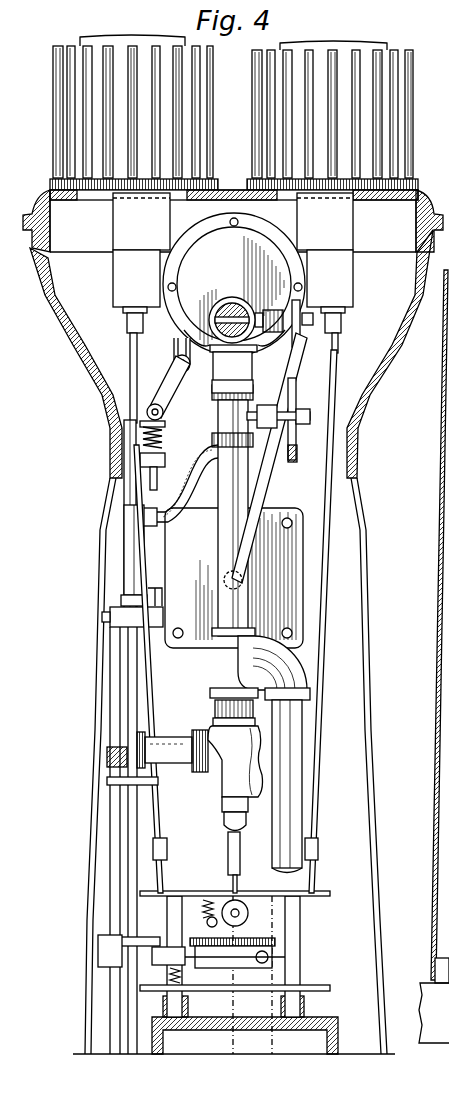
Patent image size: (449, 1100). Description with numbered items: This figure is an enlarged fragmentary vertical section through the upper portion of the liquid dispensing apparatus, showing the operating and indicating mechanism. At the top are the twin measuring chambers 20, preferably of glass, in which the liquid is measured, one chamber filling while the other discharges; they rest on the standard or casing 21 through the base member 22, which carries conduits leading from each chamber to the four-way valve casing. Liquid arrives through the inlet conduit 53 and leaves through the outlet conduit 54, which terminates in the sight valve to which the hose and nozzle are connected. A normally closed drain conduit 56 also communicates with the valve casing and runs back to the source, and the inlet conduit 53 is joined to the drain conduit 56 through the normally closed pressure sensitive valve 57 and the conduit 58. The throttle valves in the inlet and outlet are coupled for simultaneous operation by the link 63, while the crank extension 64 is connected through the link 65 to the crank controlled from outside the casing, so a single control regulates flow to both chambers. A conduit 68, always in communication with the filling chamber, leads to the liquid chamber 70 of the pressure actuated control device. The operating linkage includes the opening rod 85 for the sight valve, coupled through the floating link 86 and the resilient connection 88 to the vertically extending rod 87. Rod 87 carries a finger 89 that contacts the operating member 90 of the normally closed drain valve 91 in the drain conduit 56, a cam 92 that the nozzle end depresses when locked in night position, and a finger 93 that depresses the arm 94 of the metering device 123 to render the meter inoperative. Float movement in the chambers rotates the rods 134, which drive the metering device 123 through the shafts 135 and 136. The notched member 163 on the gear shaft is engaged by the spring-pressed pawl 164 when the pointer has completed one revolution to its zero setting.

The measuring chambers 20 is at (298, 88).
The casing 21 is at (369, 697).
The base member 22 is at (414, 296).
The inlet conduit 53 is at (300, 800).
The outlet conduit 54 is at (229, 298).
The drain conduit 56 is at (225, 478).
The pressure sensitive valve 57 is at (235, 790).
The conduit 58 is at (173, 742).
The link 63 is at (301, 370).
The crank extension 64 is at (297, 398).
The link 65 is at (298, 452).
The conduit 68 is at (276, 466).
The liquid chamber 70 is at (234, 578).
The opening rod 85 is at (176, 342).
The floating link 86 is at (166, 382).
The vertically extending rod 87 is at (130, 477).
The resilient connection 88 is at (143, 440).
The finger 89 is at (112, 618).
The operating member 90 is at (140, 605).
The drain valve 91 is at (133, 583).
The cam 92 is at (110, 744).
The finger 93 is at (133, 940).
The arm 94 is at (170, 958).
The metering device 123 is at (330, 988).
The rods 134 is at (161, 808).
The shaft 135 is at (316, 872).
The shaft 136 is at (166, 872).
The notched member 163 is at (238, 904).
The pawl 164 is at (258, 927).